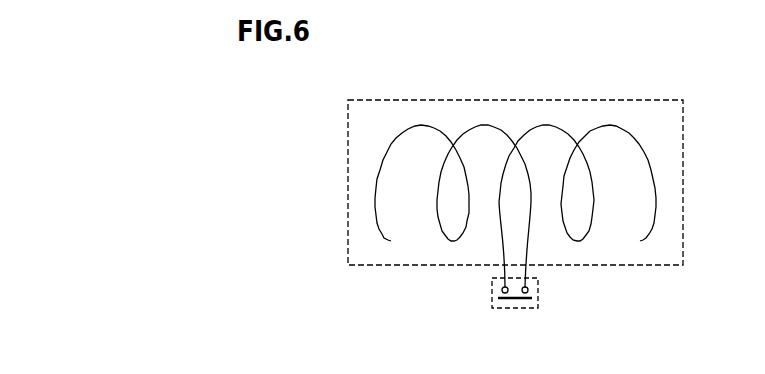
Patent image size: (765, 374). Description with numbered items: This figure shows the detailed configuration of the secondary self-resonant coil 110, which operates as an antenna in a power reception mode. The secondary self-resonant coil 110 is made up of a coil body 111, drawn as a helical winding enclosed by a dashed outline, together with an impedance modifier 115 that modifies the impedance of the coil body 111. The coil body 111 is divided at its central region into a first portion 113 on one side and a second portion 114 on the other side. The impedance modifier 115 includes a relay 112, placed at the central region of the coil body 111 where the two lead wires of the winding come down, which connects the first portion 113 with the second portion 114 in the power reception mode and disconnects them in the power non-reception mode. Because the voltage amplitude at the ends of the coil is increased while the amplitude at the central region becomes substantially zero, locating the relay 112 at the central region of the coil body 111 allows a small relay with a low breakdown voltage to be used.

The secondary self-resonant coil 110 is at (344, 138).
The coil body 111 is at (526, 100).
The relay 112 is at (515, 300).
The first portion 113 is at (422, 124).
The second portion 114 is at (618, 124).
The impedance modifier 115 is at (540, 293).